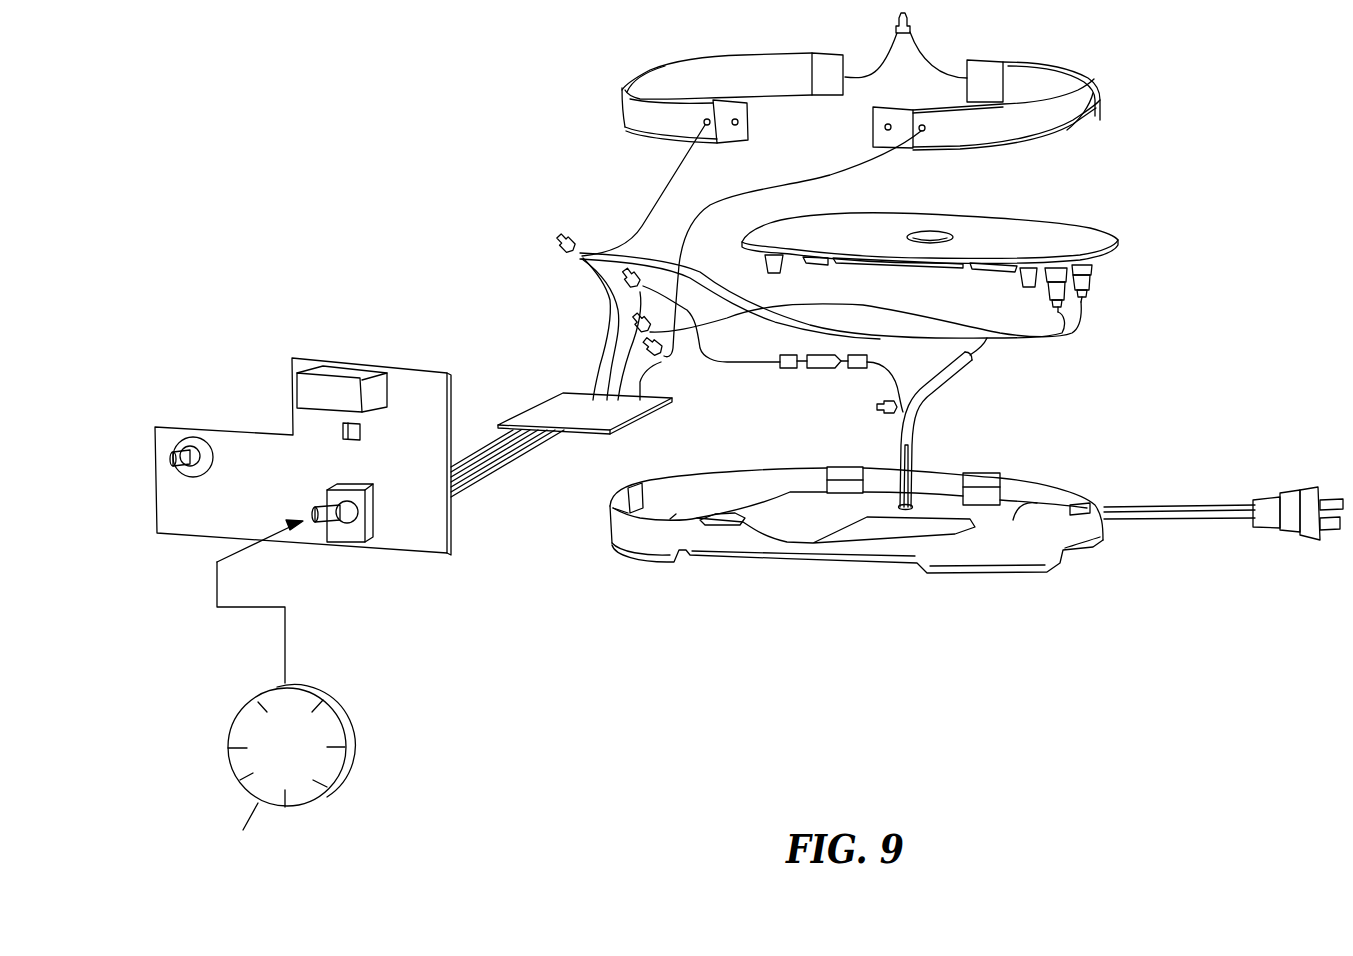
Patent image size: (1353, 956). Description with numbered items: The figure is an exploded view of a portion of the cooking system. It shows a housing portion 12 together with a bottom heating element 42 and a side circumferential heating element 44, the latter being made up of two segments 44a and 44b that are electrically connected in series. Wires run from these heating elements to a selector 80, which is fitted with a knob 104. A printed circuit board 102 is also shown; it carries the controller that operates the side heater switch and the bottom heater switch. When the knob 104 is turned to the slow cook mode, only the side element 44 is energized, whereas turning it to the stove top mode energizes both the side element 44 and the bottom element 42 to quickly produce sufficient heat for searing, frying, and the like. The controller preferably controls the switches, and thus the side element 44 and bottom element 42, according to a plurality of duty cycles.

The housing portion 12 is at (1087, 548).
The bottom heating element 42 is at (993, 225).
The side circumferential heating element 44 is at (1095, 100).
The first segment of side circumferential heating element 44a is at (637, 110).
The second segment of side circumferential heating element 44b is at (1073, 123).
The selector 80 is at (353, 520).
The printed circuit board 102 is at (543, 412).
The knob 104 is at (352, 765).